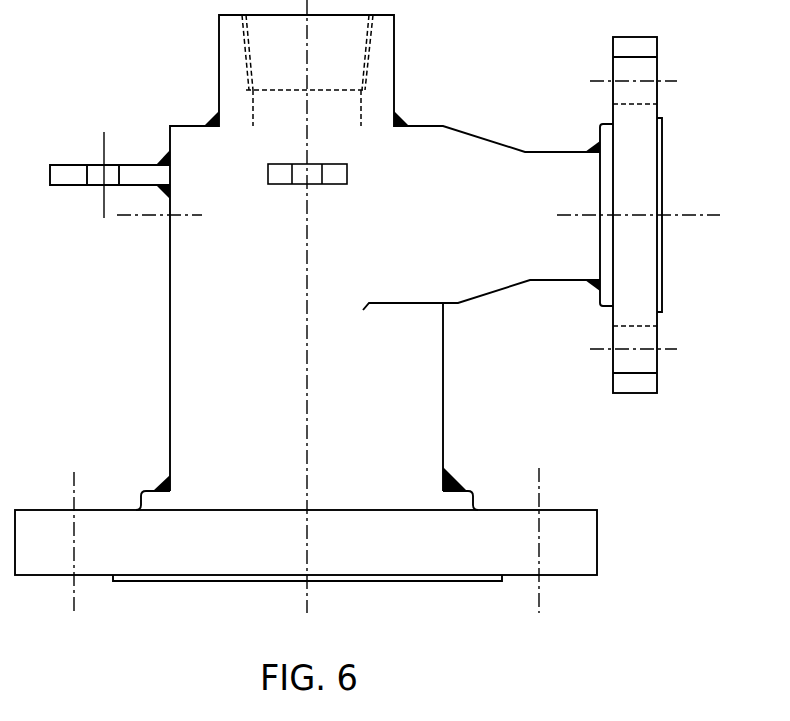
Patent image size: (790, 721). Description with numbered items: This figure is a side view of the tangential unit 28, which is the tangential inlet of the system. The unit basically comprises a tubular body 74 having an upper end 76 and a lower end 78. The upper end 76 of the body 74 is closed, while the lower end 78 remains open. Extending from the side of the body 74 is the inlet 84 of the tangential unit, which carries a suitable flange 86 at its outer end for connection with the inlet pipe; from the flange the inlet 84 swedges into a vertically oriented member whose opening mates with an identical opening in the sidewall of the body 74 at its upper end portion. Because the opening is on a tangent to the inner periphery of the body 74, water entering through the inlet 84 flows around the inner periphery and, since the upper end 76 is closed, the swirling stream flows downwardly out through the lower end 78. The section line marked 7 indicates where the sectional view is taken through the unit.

The tangential unit 28 is at (394, 298).
The tubular body 74 is at (170, 347).
The upper end 76 is at (197, 148).
The lower end 78 is at (200, 478).
The inlet 84 is at (567, 172).
The flange 86 is at (642, 193).
The section line 7- 7 is at (122, 208).